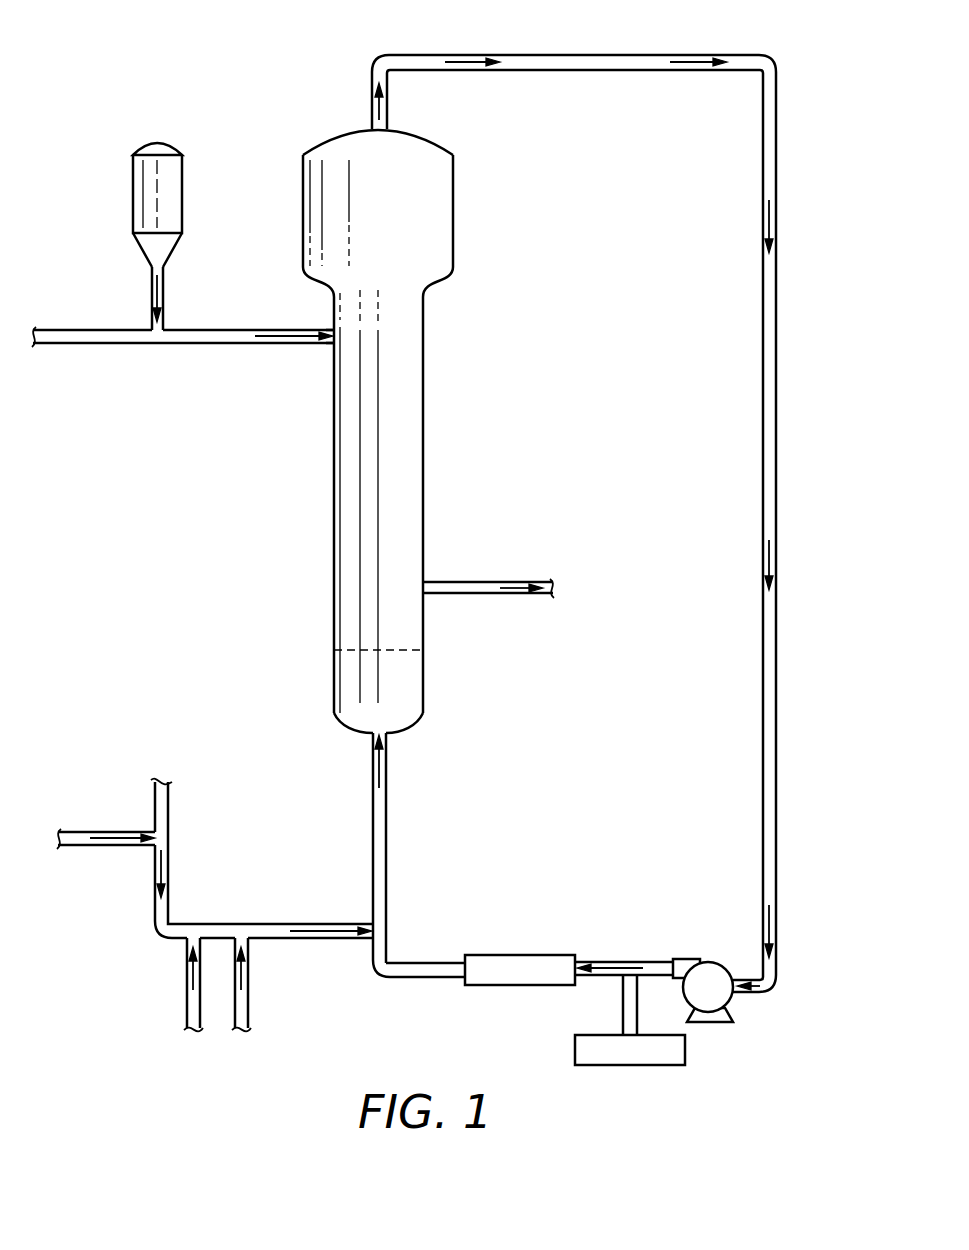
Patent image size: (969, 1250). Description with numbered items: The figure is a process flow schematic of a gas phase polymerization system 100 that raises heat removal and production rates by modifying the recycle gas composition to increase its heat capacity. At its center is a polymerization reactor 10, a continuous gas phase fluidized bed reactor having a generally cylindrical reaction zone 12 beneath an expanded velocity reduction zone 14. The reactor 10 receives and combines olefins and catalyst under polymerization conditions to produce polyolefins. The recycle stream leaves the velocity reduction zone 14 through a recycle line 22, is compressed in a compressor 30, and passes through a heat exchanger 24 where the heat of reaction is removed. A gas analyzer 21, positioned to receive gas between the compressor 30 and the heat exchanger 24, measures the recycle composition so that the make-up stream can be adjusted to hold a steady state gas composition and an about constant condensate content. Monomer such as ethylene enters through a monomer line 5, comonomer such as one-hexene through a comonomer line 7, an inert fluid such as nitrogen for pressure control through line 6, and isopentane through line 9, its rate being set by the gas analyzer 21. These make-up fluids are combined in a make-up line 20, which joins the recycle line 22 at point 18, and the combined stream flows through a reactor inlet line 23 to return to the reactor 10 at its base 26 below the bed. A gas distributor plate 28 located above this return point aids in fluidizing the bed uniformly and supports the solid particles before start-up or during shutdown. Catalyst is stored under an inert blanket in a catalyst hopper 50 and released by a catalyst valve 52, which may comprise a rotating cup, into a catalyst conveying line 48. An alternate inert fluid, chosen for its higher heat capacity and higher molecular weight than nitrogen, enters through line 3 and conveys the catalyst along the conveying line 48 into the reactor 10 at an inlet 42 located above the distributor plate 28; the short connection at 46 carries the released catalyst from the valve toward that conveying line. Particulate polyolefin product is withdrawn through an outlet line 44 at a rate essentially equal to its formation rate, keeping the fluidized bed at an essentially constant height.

The polymerization system 100 is at (138, 32).
The line 3 is at (83, 343).
The monomer line 5 is at (168, 805).
The line 6 is at (187, 972).
The comonomer line 7 is at (120, 840).
The line 9 is at (248, 973).
The polymerization reactor 10 is at (387, 441).
The reaction zone 12 is at (348, 535).
The velocity reduction zone 14 is at (422, 205).
The point 18 is at (370, 940).
The make-up line 20 is at (288, 924).
The gas analyzer 21 is at (607, 1065).
The recycle line 22 is at (762, 810).
The reactor inlet line 23 is at (373, 815).
The heat exchanger 24 is at (503, 985).
The point 26 is at (387, 733).
The gas distributor plate 28 is at (413, 650).
The compressor 30 is at (733, 1017).
The inlet 42 is at (327, 345).
The outlet line 44 is at (492, 580).
The catalyst feed line 46 is at (152, 292).
The catalyst conveying line 48 is at (220, 343).
The catalyst hopper 50 is at (133, 168).
The catalyst valve 52 is at (163, 270).